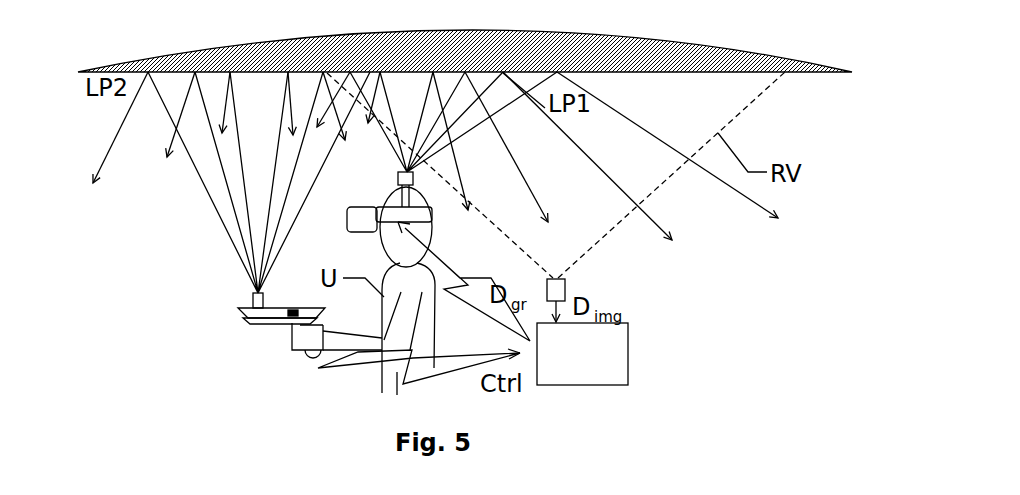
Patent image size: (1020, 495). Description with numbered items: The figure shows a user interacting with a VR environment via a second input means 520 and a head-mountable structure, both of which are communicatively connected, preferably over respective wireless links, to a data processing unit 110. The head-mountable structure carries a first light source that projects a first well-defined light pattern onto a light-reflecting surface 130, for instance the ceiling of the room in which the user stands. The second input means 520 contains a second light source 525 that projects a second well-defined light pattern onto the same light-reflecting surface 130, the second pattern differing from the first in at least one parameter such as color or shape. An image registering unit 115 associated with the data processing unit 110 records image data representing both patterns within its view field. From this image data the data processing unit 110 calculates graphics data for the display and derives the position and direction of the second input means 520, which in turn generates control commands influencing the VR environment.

The light-reflecting surface 130 is at (807, 73).
The data processing unit 110 is at (628, 355).
The image registering unit 115 is at (566, 284).
The second input means 520 is at (263, 323).
The second light source 525 is at (252, 295).